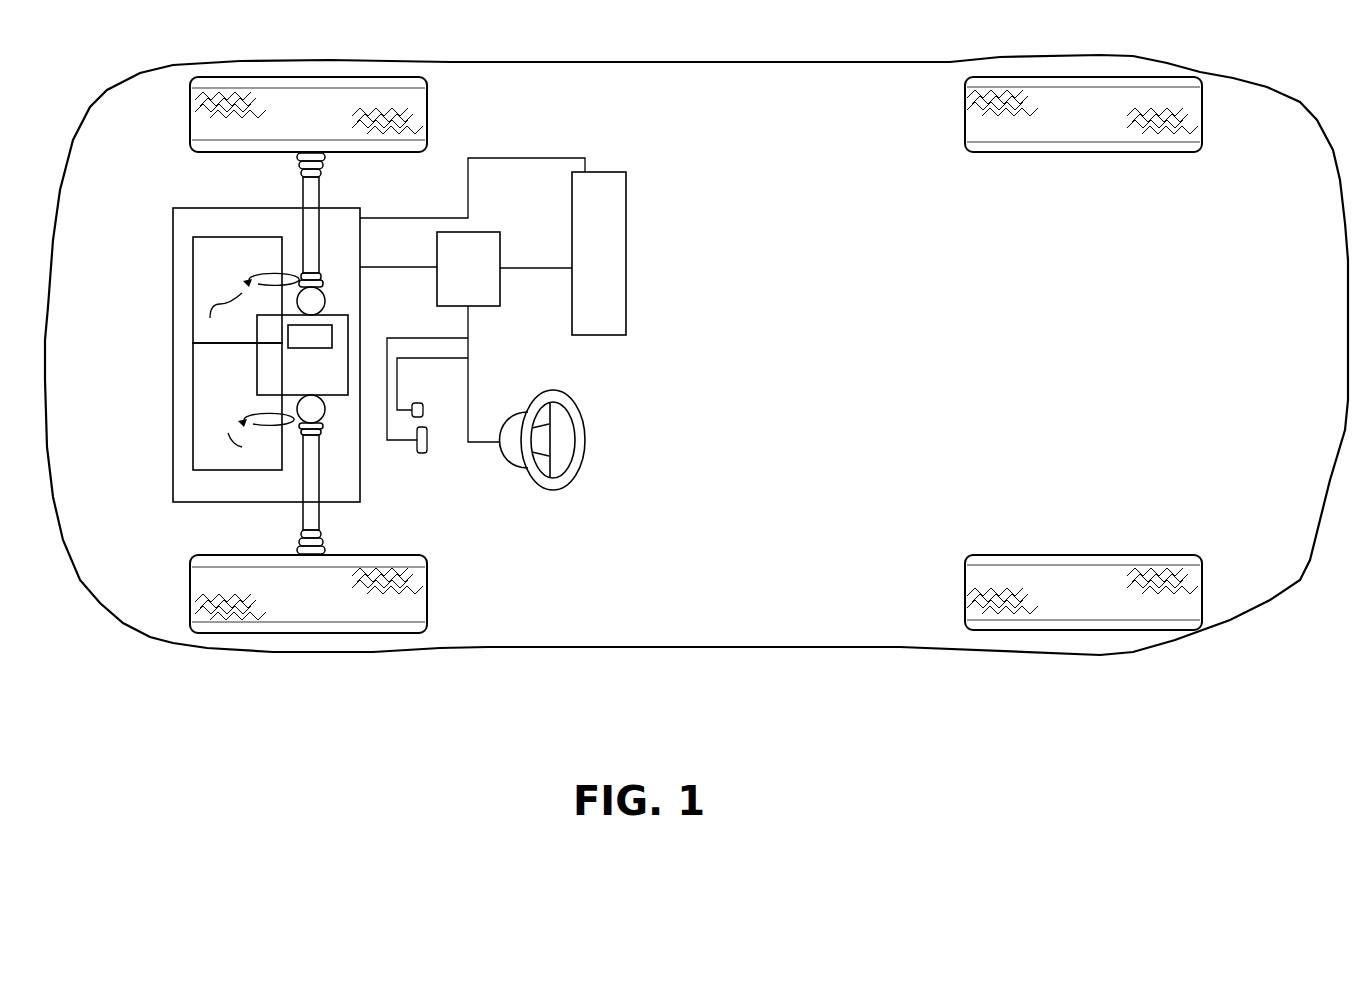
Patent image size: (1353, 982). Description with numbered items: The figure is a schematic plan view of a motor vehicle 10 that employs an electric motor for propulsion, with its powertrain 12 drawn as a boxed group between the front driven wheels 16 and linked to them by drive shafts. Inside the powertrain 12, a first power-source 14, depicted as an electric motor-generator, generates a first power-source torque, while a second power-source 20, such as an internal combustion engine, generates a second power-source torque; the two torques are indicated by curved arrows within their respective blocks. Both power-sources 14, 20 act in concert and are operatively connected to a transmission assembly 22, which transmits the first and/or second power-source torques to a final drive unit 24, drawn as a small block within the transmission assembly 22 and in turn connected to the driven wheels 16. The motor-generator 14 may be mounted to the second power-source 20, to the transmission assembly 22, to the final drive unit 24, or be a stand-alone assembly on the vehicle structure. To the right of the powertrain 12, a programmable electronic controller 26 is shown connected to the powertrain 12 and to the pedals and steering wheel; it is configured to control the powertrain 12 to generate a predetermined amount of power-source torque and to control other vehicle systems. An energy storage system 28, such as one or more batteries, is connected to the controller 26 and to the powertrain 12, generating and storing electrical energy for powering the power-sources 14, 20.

The motor vehicle 10 is at (647, 662).
The powertrain 12 is at (380, 466).
The first power-source 14 is at (251, 269).
The driven wheels 16 is at (322, 129).
The second power-source 20 is at (251, 387).
The transmission assembly 22 is at (323, 379).
The final drive unit 24 is at (330, 325).
The programmable electronic controller 26 is at (481, 279).
The energy storage system 28 is at (612, 276).